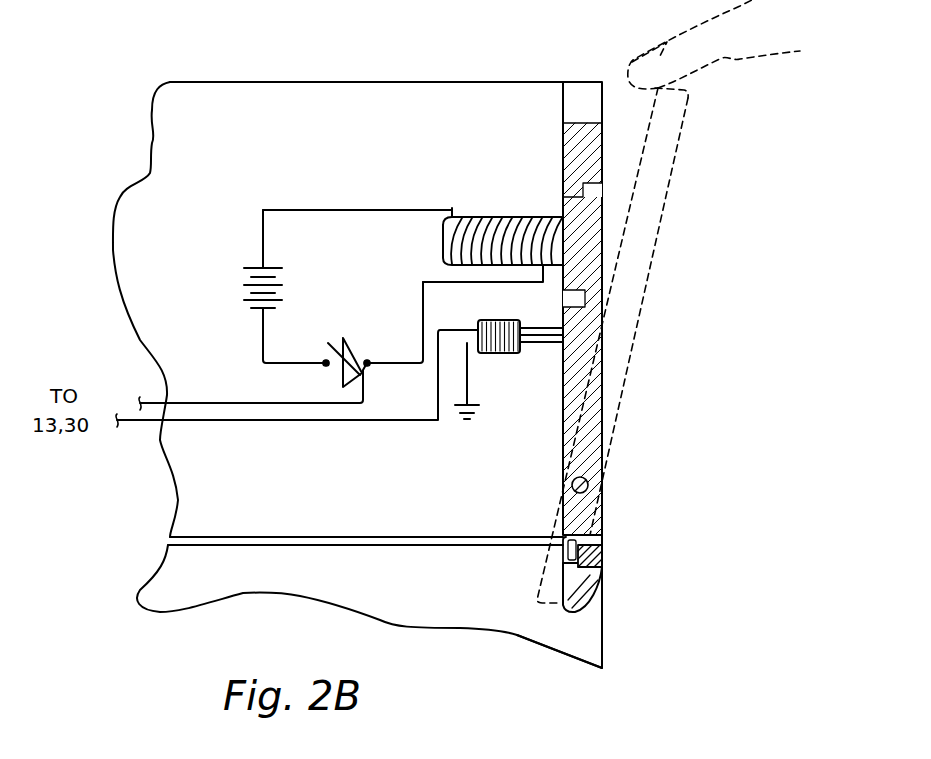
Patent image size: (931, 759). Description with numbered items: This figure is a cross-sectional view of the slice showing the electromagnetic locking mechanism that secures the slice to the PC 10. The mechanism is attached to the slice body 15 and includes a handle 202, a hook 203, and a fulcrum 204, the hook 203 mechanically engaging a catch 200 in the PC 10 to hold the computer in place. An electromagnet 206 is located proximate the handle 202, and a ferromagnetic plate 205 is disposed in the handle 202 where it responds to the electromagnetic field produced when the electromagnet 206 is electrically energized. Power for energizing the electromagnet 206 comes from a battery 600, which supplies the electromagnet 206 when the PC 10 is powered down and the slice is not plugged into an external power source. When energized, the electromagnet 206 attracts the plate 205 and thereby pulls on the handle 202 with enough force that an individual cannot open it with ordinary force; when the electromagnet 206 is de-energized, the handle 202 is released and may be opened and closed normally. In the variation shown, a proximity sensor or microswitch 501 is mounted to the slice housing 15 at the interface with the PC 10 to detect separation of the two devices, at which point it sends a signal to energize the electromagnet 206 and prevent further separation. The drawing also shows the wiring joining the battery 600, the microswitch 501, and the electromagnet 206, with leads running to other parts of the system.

The slice body 15 is at (233, 87).
The PC 10 is at (553, 640).
The handle 202 is at (563, 143).
The electromagnet 206 is at (490, 217).
The microswitch 501 is at (537, 325).
The battery 600 is at (243, 290).
The ferromagnetic plate 205 is at (602, 232).
The fulcrum 204 is at (598, 490).
The catch 200 is at (602, 560).
The hook 203 is at (600, 608).